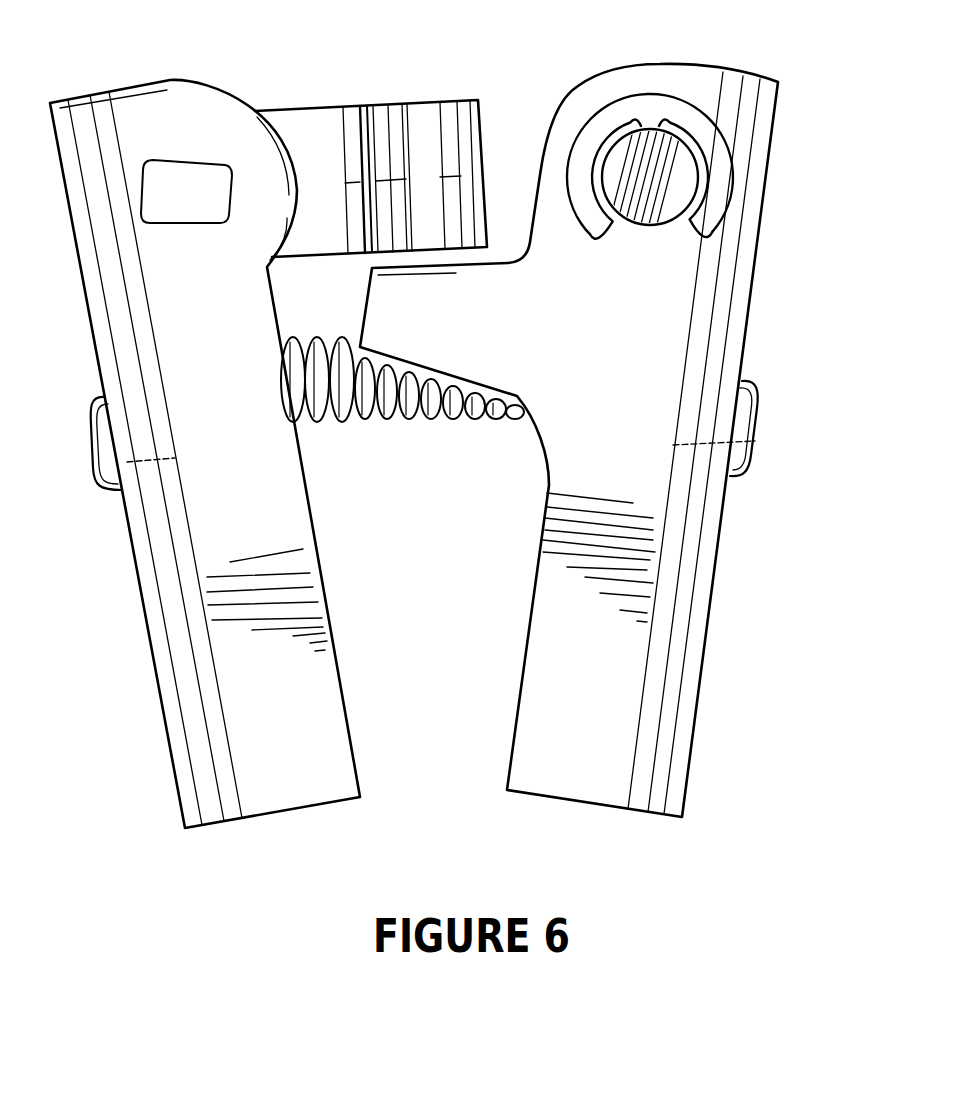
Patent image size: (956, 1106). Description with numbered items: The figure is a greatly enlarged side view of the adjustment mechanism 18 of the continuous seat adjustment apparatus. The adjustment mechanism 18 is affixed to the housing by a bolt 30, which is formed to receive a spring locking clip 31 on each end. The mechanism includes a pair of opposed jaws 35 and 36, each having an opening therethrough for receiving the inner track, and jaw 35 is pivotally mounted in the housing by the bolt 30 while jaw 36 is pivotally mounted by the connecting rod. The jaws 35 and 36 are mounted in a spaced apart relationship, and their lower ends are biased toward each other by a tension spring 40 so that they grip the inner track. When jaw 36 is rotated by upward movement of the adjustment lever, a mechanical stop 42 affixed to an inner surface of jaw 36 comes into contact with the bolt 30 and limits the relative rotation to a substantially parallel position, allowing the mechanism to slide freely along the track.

The adjustment mechanism 18 is at (446, 425).
The bolt 30 is at (652, 225).
The spring locking clip 31 is at (592, 215).
The jaw 35 is at (569, 440).
The jaw 36 is at (205, 454).
The tension spring 40 is at (418, 420).
The mechanical stop 42 is at (460, 100).